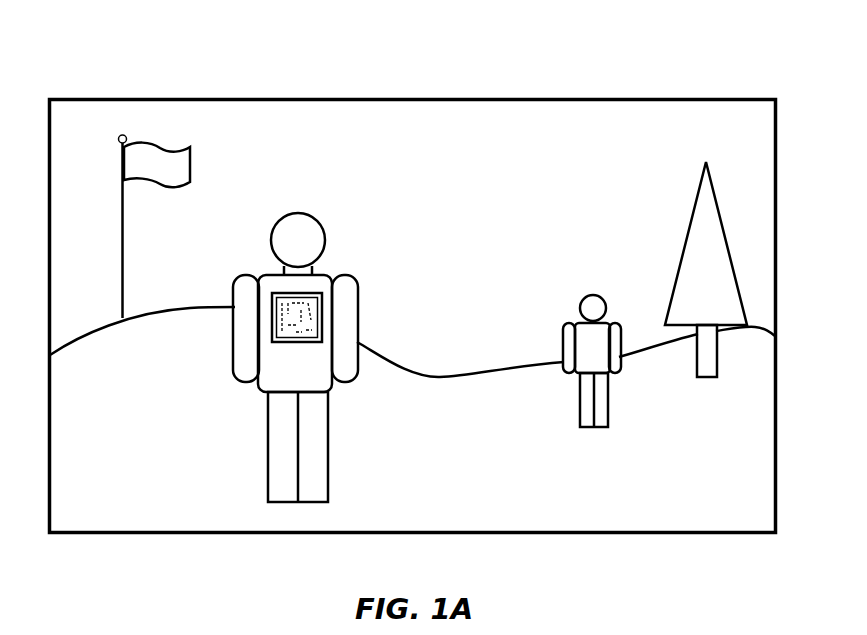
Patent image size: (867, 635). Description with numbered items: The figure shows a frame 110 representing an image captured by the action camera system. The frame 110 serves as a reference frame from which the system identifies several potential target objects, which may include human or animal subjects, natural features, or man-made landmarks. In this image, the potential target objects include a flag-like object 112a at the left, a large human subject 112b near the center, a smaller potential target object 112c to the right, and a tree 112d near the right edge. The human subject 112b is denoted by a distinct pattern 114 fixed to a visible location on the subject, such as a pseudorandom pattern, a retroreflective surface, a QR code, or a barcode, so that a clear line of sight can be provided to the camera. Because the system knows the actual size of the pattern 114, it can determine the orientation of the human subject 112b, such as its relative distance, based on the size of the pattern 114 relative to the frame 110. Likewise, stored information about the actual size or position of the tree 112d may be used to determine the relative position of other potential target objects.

The frame 110 is at (73, 58).
The potential target object 112a is at (194, 164).
The human subject 112b is at (288, 342).
The potential target object 112c is at (584, 300).
The tree 112d is at (683, 250).
The pattern 114 is at (287, 347).